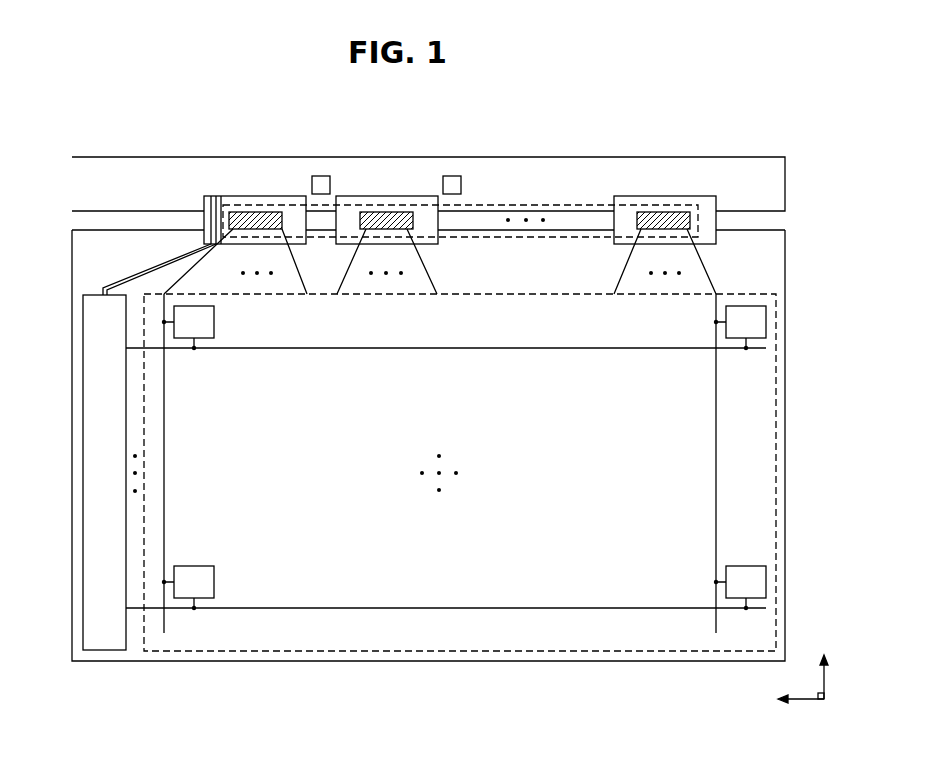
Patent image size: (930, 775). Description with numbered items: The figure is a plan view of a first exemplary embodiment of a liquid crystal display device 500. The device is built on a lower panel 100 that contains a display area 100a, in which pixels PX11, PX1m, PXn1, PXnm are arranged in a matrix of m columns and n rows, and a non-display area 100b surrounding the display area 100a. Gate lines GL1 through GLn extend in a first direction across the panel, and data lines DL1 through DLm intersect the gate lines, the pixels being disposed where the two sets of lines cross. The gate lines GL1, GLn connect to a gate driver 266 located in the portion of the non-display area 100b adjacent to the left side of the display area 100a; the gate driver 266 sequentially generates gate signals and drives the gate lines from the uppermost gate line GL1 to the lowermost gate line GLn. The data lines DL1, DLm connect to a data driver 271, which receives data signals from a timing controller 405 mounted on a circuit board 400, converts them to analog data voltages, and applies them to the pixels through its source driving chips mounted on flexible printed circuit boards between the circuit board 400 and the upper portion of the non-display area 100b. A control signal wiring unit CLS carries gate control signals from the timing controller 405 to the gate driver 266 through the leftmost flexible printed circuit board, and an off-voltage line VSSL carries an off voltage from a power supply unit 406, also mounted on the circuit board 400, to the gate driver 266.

The LCD device 500 is at (133, 149).
The circuit board 400 is at (776, 183).
The lower panel 100 is at (785, 510).
The display area 100a is at (764, 370).
The non-display area 100b is at (776, 260).
The data driver 271 is at (524, 205).
The timing controller 405 is at (321, 176).
The power supply unit 406 is at (452, 176).
The gate driver 266 is at (83, 472).
The control signal wiring unit CLS is at (162, 265).
The off-voltage line VSSL is at (128, 281).
The gate line GL1 is at (300, 349).
The gate line GLn is at (298, 607).
The data line DL1 is at (164, 463).
The data line DLm is at (716, 463).
The pixel PX11 is at (188, 328).
The pixel PX1m is at (740, 328).
The pixel PXn1 is at (188, 588).
The pixel PXnm is at (740, 588).